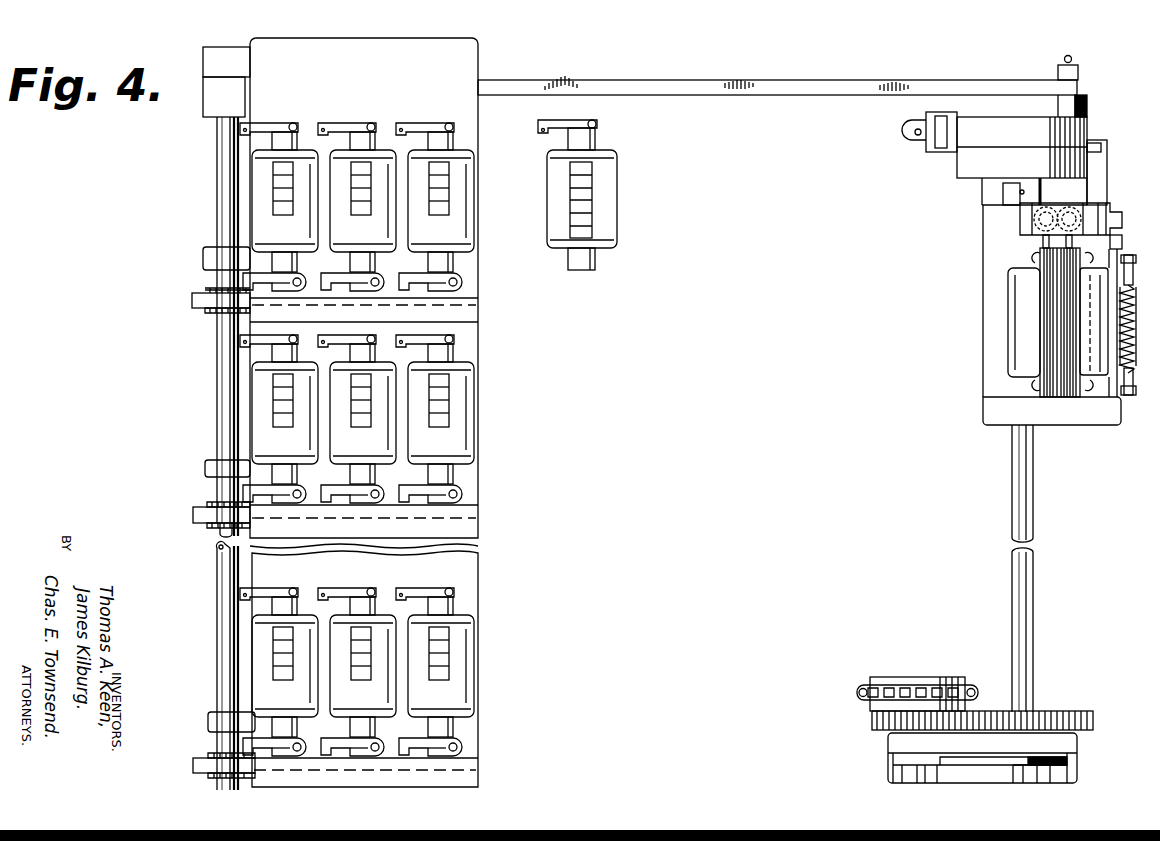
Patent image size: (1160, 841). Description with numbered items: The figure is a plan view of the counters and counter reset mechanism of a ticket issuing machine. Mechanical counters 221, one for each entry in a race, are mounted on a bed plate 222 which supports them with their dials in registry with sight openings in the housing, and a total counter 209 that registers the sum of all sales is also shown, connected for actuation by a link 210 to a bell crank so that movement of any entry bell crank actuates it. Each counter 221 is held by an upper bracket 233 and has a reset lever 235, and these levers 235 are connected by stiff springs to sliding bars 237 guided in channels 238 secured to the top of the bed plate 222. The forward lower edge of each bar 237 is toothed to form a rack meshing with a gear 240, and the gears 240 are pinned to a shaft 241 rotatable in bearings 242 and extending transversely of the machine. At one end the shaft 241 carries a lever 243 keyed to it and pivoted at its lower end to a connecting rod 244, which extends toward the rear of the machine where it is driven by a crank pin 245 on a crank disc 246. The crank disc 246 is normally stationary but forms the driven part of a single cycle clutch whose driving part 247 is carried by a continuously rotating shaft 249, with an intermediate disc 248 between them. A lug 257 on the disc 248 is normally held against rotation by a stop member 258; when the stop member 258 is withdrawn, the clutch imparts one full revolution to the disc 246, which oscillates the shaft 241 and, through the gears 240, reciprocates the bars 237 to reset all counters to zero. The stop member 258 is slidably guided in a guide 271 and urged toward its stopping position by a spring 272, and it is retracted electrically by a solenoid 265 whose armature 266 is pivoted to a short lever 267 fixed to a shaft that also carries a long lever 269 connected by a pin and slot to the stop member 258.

The total counter 209 is at (617, 202).
The link 210 is at (556, 120).
The mechanical counters 221 is at (262, 182).
The plate 222 is at (466, 53).
The upper counter bracket 233 is at (415, 122).
The lever 235 is at (262, 286).
The sliding bars 237 is at (192, 300).
The channels 238 is at (456, 311).
The gear 240 is at (214, 309).
The shaft 241 is at (217, 207).
The bearings 242 is at (203, 56).
The lever 243 is at (203, 113).
The connecting rod 244 is at (665, 82).
The crank pin 245 is at (1074, 58).
The crank disc 246 is at (1088, 130).
The driving part 247 is at (965, 170).
The intermediate disc 248 is at (957, 148).
The continuously rotating shaft 249 is at (1035, 507).
The lug 257 is at (1101, 148).
The stop member 258 is at (1107, 178).
The solenoid 265 is at (1012, 310).
The armature 266 is at (1040, 241).
The short lever 267 is at (1040, 213).
The long lever 269 is at (1100, 212).
The guide 271 is at (1118, 250).
The spring 272 is at (1135, 372).